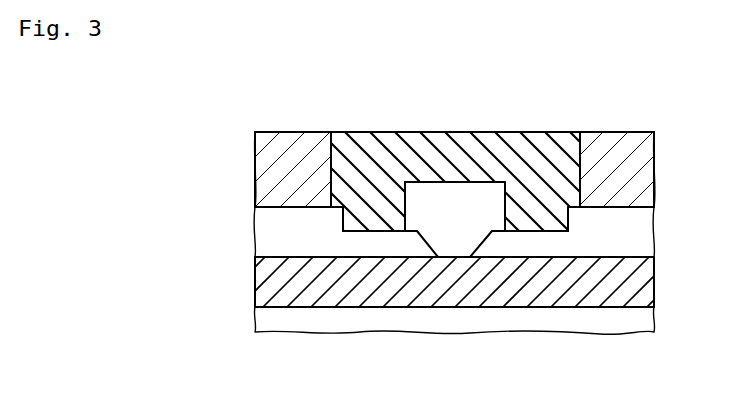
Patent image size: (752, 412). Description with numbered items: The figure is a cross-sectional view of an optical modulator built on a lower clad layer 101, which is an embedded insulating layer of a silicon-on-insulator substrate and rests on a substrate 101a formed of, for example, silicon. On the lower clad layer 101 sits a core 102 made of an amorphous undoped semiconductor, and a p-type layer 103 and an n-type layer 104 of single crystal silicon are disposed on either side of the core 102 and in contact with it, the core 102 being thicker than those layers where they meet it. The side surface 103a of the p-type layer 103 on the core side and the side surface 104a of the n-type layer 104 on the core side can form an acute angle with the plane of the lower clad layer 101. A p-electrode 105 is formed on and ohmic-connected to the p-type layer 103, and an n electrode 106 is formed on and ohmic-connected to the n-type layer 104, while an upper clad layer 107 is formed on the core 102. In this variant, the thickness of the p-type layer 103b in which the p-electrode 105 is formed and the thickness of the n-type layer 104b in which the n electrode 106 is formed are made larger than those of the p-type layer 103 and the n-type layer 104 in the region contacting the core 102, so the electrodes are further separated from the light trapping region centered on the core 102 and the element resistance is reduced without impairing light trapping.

The lower clad layer 101 is at (655, 279).
The substrate 101a is at (655, 320).
The core 102 is at (457, 242).
The p-type layer 103 is at (330, 243).
The side surface of the p-type layer 103a is at (405, 203).
The p-type layer in which the p-electrode is formed 103b is at (297, 210).
The n-type layer 104 is at (580, 243).
The side surface of the n-type layer 104a is at (505, 203).
The n-type layer in which the n electrode is formed 104b is at (615, 210).
The p-electrode 105 is at (287, 131).
The n electrode 106 is at (619, 131).
The upper clad layer 107 is at (454, 131).